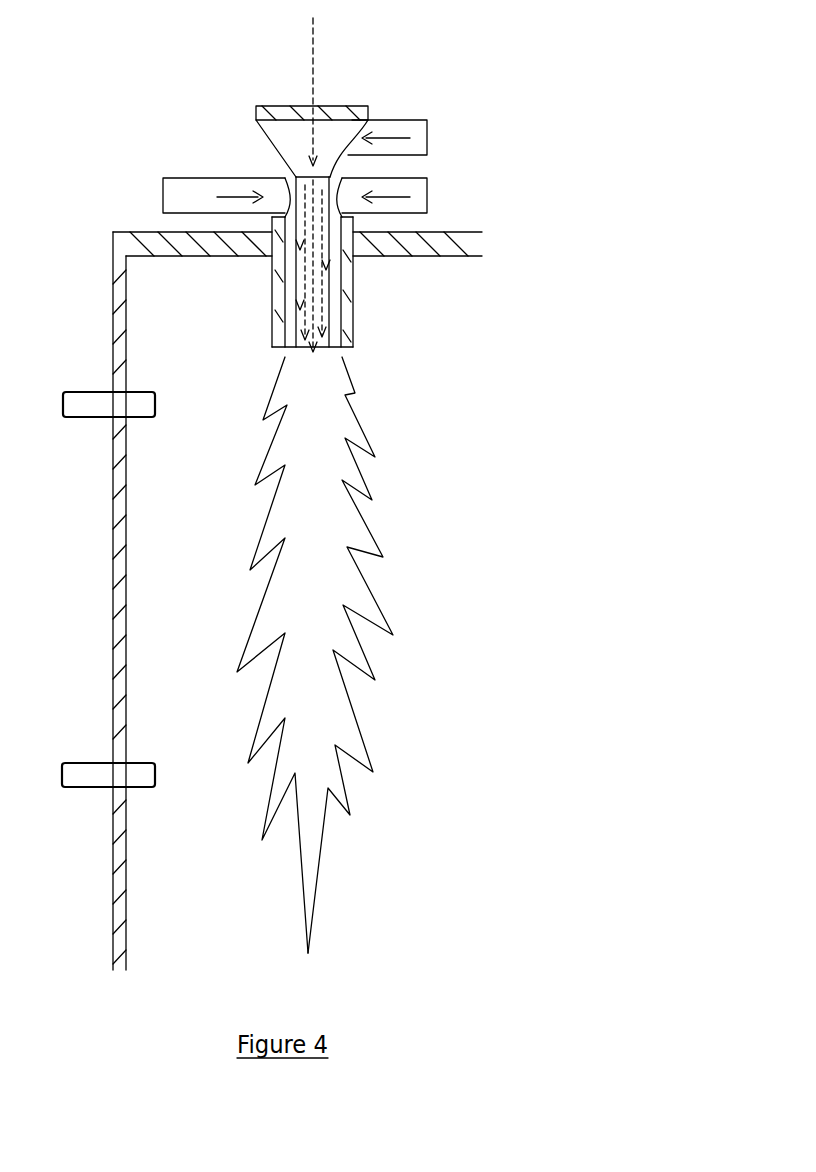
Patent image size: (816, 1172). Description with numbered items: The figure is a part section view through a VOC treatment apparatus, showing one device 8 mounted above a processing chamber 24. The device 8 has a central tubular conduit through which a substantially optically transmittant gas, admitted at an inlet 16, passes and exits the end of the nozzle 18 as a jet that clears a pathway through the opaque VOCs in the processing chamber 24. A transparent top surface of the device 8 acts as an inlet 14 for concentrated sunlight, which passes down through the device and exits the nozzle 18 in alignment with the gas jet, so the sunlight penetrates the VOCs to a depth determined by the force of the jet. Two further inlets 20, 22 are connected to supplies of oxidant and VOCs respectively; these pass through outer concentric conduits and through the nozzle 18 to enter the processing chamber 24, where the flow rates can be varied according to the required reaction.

The device 8 is at (246, 90).
The inlet 14 is at (333, 105).
The inlet 16 is at (413, 120).
The nozzle 18 is at (362, 347).
The inlet 20 is at (427, 197).
The inlet 22 is at (178, 178).
The processing chamber 24 is at (143, 598).